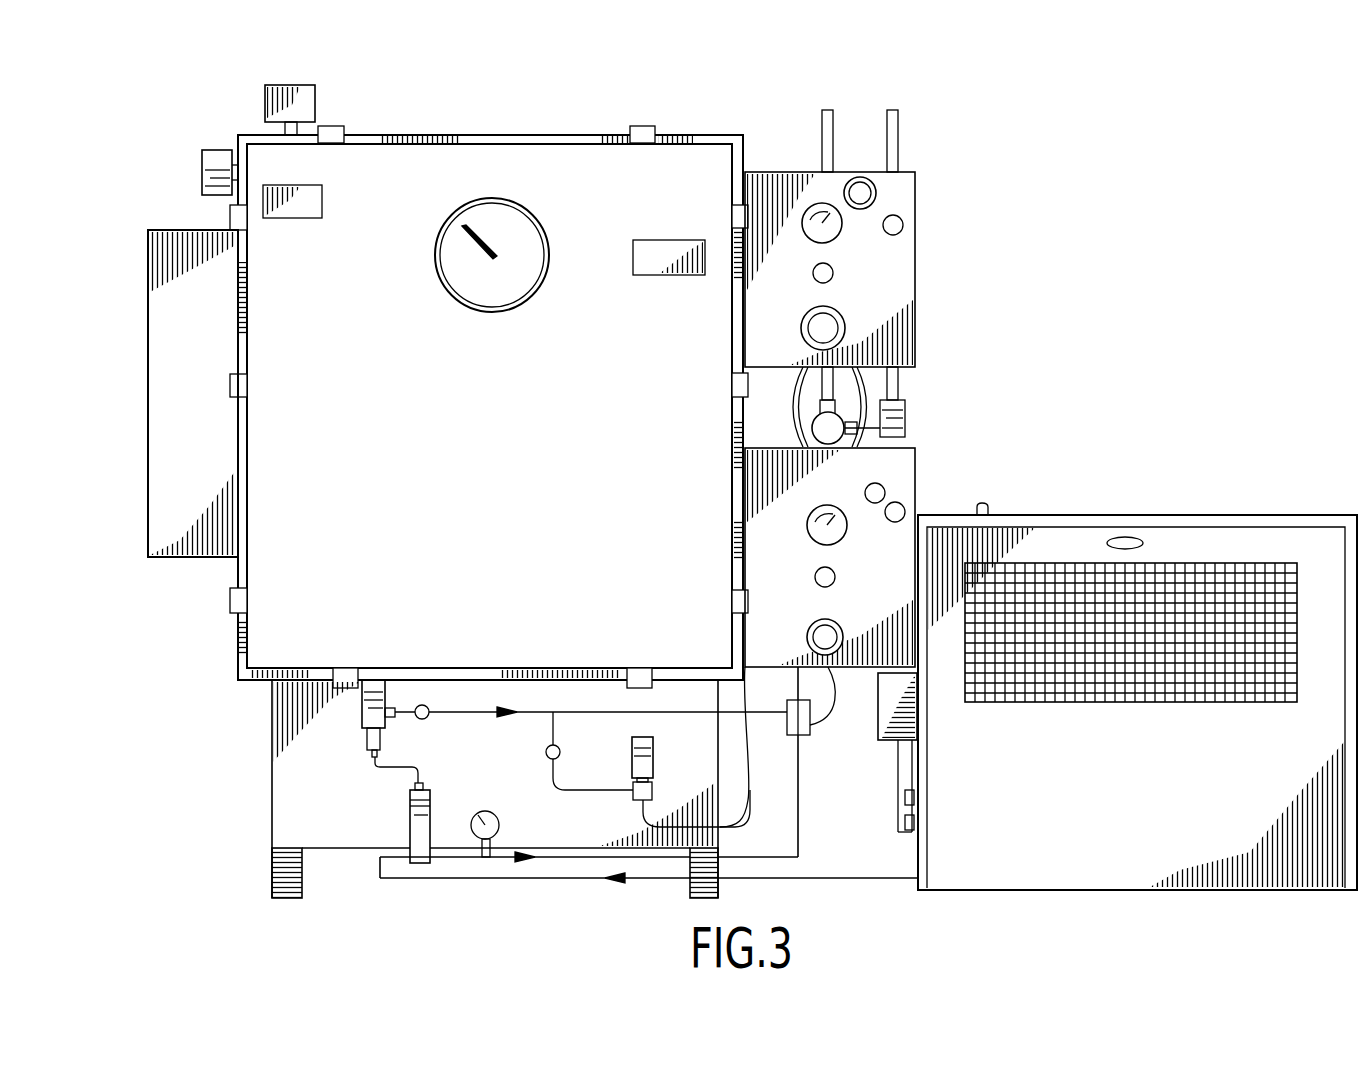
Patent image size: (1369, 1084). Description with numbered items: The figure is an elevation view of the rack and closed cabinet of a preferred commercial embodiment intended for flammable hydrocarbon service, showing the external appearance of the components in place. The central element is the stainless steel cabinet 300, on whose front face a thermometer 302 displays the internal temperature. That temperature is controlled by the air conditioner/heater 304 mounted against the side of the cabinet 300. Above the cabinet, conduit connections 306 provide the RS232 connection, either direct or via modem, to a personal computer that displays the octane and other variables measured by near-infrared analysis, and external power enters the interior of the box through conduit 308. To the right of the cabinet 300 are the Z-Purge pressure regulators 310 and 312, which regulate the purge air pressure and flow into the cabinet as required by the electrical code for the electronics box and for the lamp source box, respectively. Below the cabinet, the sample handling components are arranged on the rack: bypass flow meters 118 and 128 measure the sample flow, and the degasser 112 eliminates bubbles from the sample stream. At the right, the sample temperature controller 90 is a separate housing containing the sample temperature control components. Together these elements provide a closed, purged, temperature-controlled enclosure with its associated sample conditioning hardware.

The sample temperature controller 90 is at (1151, 800).
The degasser 112 is at (410, 812).
The bypass flow meter 118 is at (383, 722).
The bypass flow meter 128 is at (653, 792).
The stainless steel cabinet 300 is at (509, 494).
The thermometer 302 is at (512, 275).
The air conditioner/heater 304 is at (215, 463).
The conduit connections 306 is at (212, 174).
The conduit 308 is at (308, 94).
The Z-Purge pressure regulator 310 is at (896, 298).
The Z-Purge pressure regulator 312 is at (898, 598).